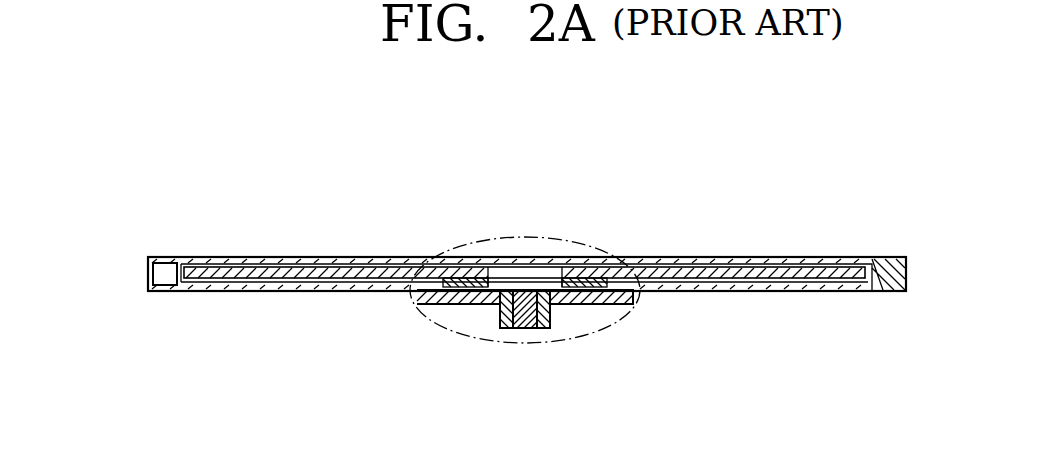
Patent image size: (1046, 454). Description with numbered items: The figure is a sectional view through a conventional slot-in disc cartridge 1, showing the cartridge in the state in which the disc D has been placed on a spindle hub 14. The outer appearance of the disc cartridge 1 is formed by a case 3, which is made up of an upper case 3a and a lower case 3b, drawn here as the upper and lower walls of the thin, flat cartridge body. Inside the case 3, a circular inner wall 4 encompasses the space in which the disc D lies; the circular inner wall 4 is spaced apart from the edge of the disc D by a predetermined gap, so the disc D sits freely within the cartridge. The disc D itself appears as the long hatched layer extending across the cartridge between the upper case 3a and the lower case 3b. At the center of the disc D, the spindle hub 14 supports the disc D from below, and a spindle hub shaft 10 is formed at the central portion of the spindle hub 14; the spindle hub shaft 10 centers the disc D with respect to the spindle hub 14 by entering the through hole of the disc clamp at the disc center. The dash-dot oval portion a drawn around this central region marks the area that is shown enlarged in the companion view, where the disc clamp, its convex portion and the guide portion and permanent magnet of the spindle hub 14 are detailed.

The disc cartridge 1 is at (836, 250).
The case 3 is at (476, 276).
The upper case 3a is at (148, 264).
The lower case 3b is at (477, 297).
The circular inner wall 4 is at (186, 284).
The disc D is at (309, 264).
The oval portion a is at (525, 237).
The spindle hub 14 is at (478, 326).
The spindle hub shaft 10 is at (525, 329).